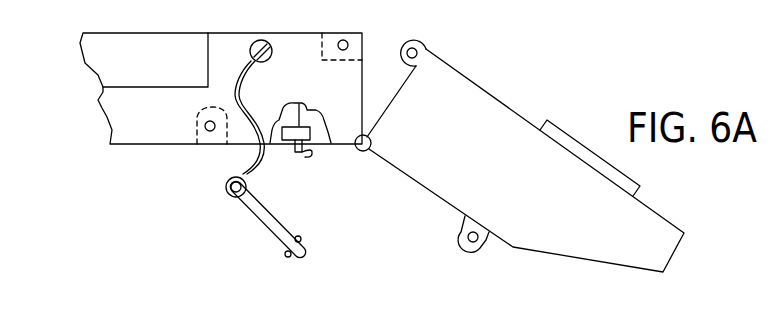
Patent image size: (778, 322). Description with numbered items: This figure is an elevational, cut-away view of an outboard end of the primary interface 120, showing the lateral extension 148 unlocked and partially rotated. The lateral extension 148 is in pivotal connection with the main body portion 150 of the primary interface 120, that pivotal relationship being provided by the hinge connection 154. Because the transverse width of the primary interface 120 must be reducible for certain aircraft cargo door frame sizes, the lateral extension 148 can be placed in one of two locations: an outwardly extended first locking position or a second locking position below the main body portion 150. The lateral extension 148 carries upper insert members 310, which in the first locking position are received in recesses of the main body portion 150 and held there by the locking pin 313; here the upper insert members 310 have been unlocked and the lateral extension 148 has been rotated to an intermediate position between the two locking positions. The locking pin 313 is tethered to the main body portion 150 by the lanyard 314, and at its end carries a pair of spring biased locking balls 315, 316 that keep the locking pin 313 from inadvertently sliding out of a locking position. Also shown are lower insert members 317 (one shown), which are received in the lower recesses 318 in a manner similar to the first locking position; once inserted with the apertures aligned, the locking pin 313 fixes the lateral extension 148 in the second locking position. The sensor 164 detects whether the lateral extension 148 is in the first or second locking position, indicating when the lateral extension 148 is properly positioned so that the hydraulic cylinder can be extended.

The primary interface 120 is at (94, 93).
The main body portion 150 is at (160, 110).
The lower recesses 318 is at (197, 143).
The sensor 164 is at (303, 152).
The lanyard 314 is at (228, 178).
The locking pin 313 is at (260, 220).
The spring biased locking ball 315 is at (300, 240).
The spring biased locking ball 316 is at (287, 255).
The hinge connection 154 is at (363, 151).
The lateral extension 148 is at (597, 247).
The upper insert members 310 is at (422, 43).
The lower insert members 317 is at (475, 248).